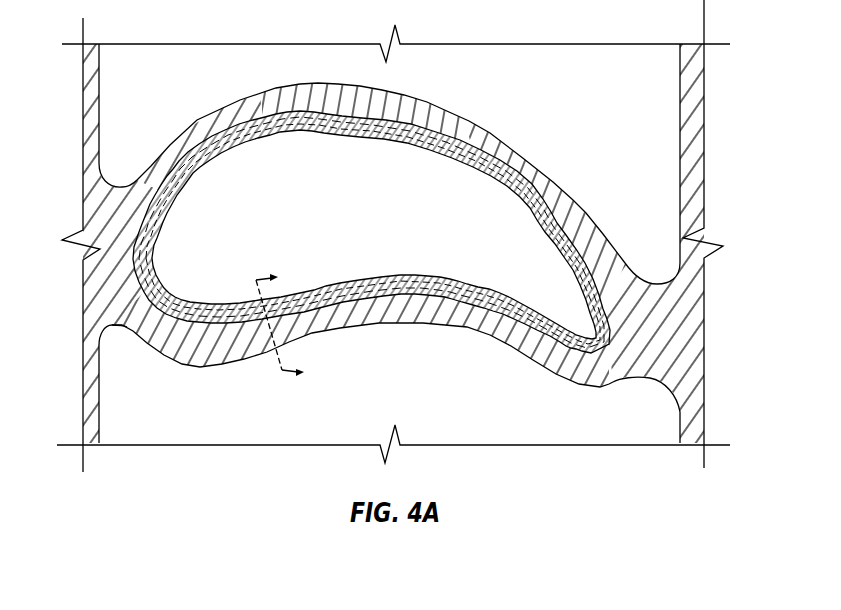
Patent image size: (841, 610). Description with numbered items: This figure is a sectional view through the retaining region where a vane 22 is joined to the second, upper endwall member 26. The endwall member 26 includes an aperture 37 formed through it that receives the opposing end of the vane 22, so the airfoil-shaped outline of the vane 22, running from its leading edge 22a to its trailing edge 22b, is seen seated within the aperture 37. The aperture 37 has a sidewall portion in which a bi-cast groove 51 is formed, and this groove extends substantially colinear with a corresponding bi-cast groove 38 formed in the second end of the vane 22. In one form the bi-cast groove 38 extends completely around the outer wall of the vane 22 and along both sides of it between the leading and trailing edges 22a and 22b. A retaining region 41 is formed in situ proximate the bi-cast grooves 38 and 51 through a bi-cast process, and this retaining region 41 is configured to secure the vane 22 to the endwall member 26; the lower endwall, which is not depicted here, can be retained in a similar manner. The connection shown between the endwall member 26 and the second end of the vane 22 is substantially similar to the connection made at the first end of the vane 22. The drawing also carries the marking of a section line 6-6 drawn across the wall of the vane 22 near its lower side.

The vane 22 is at (368, 229).
The leading edge 22a is at (140, 214).
The trailing edge 22b is at (610, 350).
The second endwall member 26 is at (692, 125).
The aperture 37 is at (335, 227).
The bi-cast groove 38 is at (427, 281).
The retaining region 41 is at (247, 127).
The bi-cast groove 51 is at (467, 137).
The section line 6- 6 is at (289, 323).